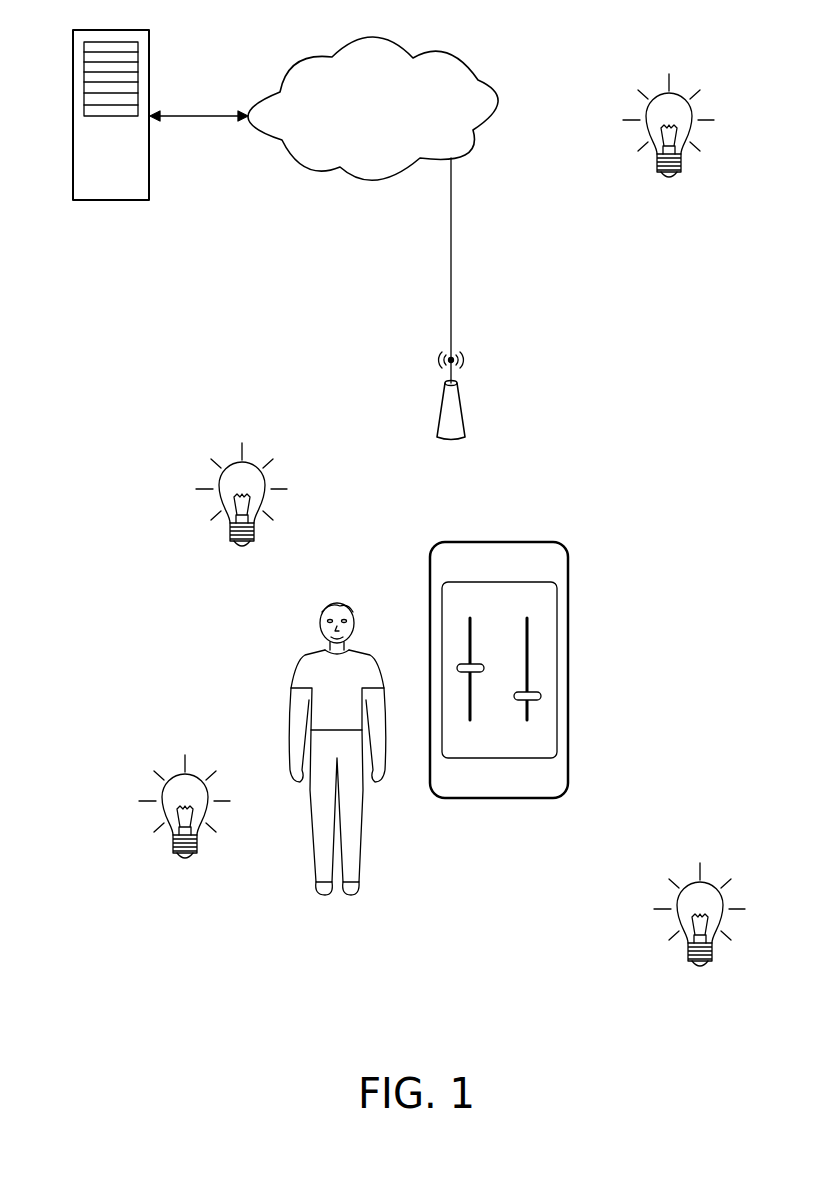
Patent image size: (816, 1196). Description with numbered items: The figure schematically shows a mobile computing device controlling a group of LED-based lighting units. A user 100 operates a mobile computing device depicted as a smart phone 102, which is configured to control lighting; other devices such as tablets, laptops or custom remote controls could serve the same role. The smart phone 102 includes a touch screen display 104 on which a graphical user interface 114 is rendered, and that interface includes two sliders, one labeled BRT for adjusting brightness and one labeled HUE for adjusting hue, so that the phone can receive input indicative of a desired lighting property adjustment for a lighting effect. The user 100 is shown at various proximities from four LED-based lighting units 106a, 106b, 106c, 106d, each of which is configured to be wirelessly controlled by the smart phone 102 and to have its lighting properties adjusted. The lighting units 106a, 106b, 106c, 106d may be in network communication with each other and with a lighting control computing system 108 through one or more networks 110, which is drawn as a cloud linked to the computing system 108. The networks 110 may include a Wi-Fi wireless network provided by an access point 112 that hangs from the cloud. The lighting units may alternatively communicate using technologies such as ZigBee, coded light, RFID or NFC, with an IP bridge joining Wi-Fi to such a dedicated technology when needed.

The user 100 is at (293, 667).
The smart phone 102 is at (518, 542).
The touch screen display 104 is at (547, 609).
The LED-based lighting unit 106a is at (148, 806).
The LED-based lighting unit 106b is at (205, 494).
The LED-based lighting unit 106c is at (632, 125).
The LED-based lighting unit 106d is at (663, 914).
The lighting control computing system 108 is at (150, 52).
The networks 110 is at (303, 170).
The access point 112 is at (440, 405).
The graphical user interface 114 is at (537, 668).